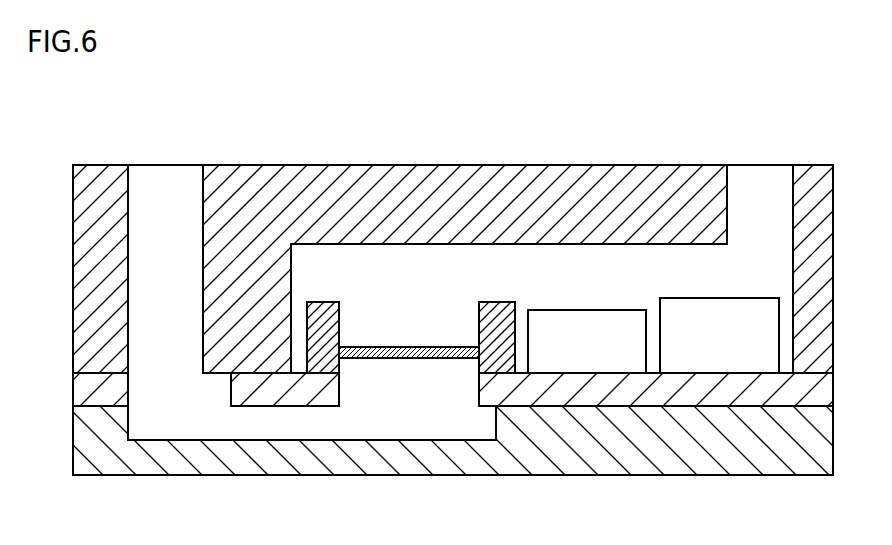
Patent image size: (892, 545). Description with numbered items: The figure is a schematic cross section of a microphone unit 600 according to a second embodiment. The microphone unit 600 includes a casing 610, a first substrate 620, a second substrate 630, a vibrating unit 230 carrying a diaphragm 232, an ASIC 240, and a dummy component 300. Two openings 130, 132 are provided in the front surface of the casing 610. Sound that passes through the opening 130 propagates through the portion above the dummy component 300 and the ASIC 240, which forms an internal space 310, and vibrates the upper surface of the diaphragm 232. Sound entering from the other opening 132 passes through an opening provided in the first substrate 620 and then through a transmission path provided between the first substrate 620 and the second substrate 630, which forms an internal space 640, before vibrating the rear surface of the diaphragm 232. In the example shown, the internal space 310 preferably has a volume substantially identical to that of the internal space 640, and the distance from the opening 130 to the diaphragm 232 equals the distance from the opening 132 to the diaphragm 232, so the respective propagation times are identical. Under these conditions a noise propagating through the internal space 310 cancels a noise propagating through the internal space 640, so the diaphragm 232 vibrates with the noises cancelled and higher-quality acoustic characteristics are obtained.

The microphone unit 600 is at (243, 112).
The casing 610 is at (101, 182).
The opening 132 is at (164, 182).
The internal space 310 is at (428, 273).
The opening 130 is at (748, 190).
The vibrating unit 230 is at (325, 308).
The diaphragm 232 is at (403, 345).
The ASIC 240 is at (586, 323).
The dummy component 300 is at (717, 312).
The first substrate 620 is at (82, 391).
The second substrate 630 is at (82, 437).
The internal space 640 is at (421, 421).